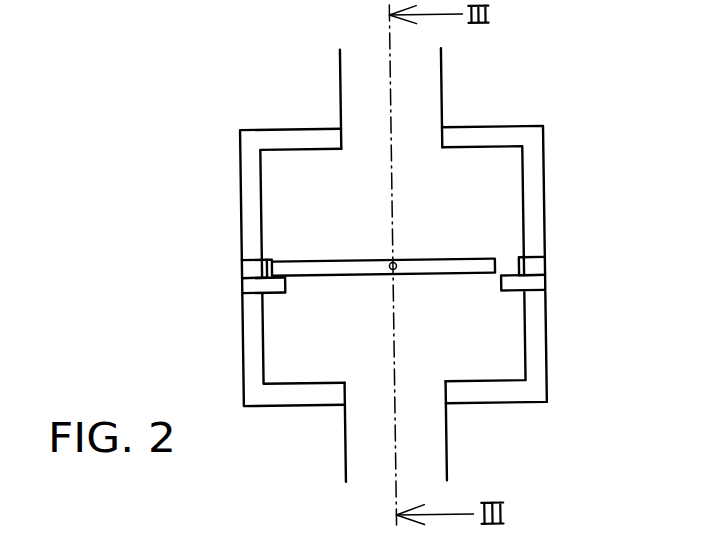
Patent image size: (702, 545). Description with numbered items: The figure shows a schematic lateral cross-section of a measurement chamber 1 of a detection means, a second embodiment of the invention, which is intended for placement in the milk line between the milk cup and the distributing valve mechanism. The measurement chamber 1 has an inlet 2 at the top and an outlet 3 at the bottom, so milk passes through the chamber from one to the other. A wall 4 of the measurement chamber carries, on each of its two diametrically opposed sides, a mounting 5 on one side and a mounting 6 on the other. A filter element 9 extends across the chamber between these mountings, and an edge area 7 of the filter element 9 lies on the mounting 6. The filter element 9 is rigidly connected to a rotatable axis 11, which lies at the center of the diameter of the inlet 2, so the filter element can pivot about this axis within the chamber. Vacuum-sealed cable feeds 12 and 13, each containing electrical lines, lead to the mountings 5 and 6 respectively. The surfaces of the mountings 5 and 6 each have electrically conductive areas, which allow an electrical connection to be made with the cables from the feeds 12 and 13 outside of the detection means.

The measurement chamber 1 is at (207, 74).
The inlet 2 is at (420, 80).
The outlet 3 is at (431, 444).
The wall 4 is at (534, 140).
The mounting 5 is at (547, 268).
The mounting 6 is at (255, 272).
The edge area 7 is at (280, 258).
The filter element 9 is at (445, 260).
The rotatable axis 11 is at (396, 271).
The vacuum-sealed cable feed 12 is at (545, 282).
The vacuum-sealed cable feed 13 is at (240, 284).